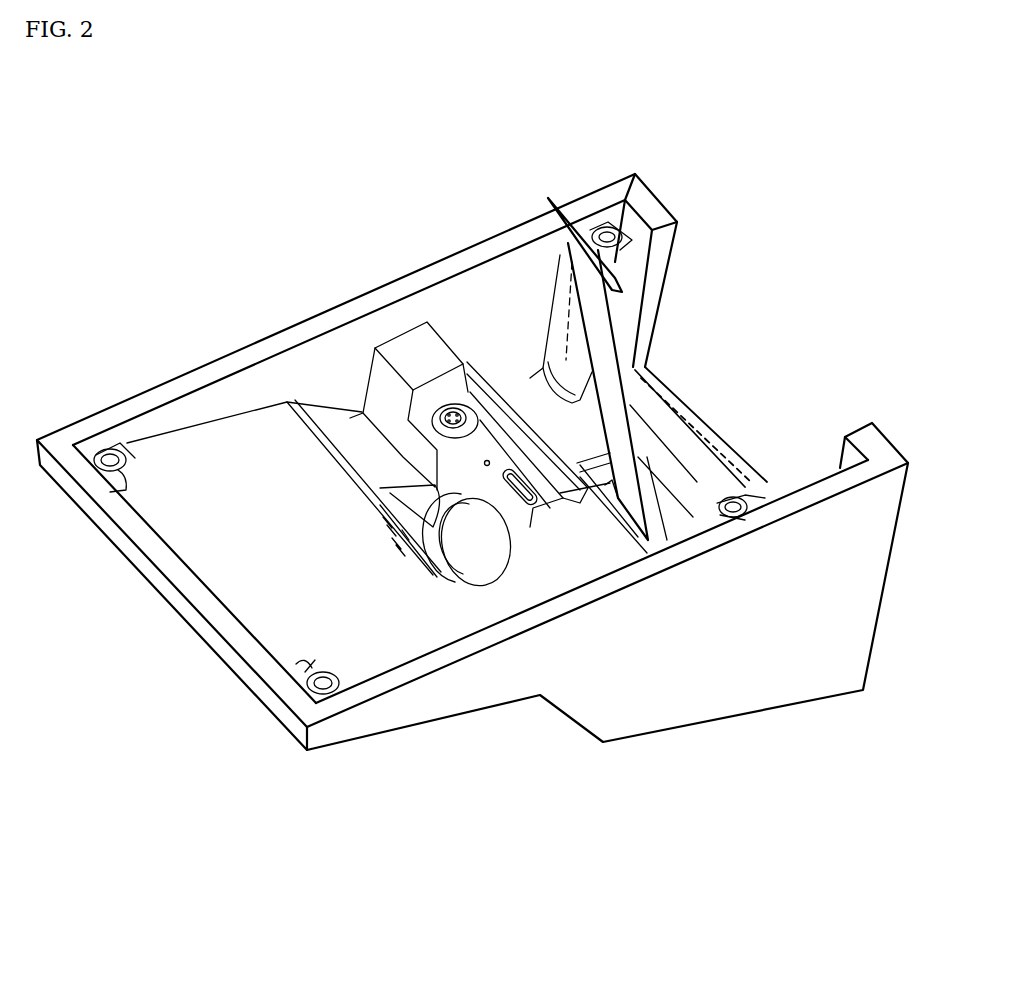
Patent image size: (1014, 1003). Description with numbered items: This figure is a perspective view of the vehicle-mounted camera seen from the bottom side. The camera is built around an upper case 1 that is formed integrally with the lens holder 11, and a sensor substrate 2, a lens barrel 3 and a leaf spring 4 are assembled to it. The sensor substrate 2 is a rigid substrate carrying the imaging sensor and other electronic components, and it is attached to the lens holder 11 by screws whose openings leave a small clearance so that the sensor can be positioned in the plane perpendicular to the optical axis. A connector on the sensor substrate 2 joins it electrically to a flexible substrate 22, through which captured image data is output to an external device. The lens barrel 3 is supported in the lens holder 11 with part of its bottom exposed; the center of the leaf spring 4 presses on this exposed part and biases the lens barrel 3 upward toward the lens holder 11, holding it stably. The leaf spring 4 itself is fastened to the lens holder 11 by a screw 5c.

The upper case 1 is at (662, 705).
The sensor substrate 2 is at (533, 448).
The lens barrel 3 is at (487, 583).
The leaf spring 4 is at (487, 462).
The screw 5c is at (445, 405).
The lens holder 11 is at (547, 567).
The flexible substrate 22 is at (603, 333).